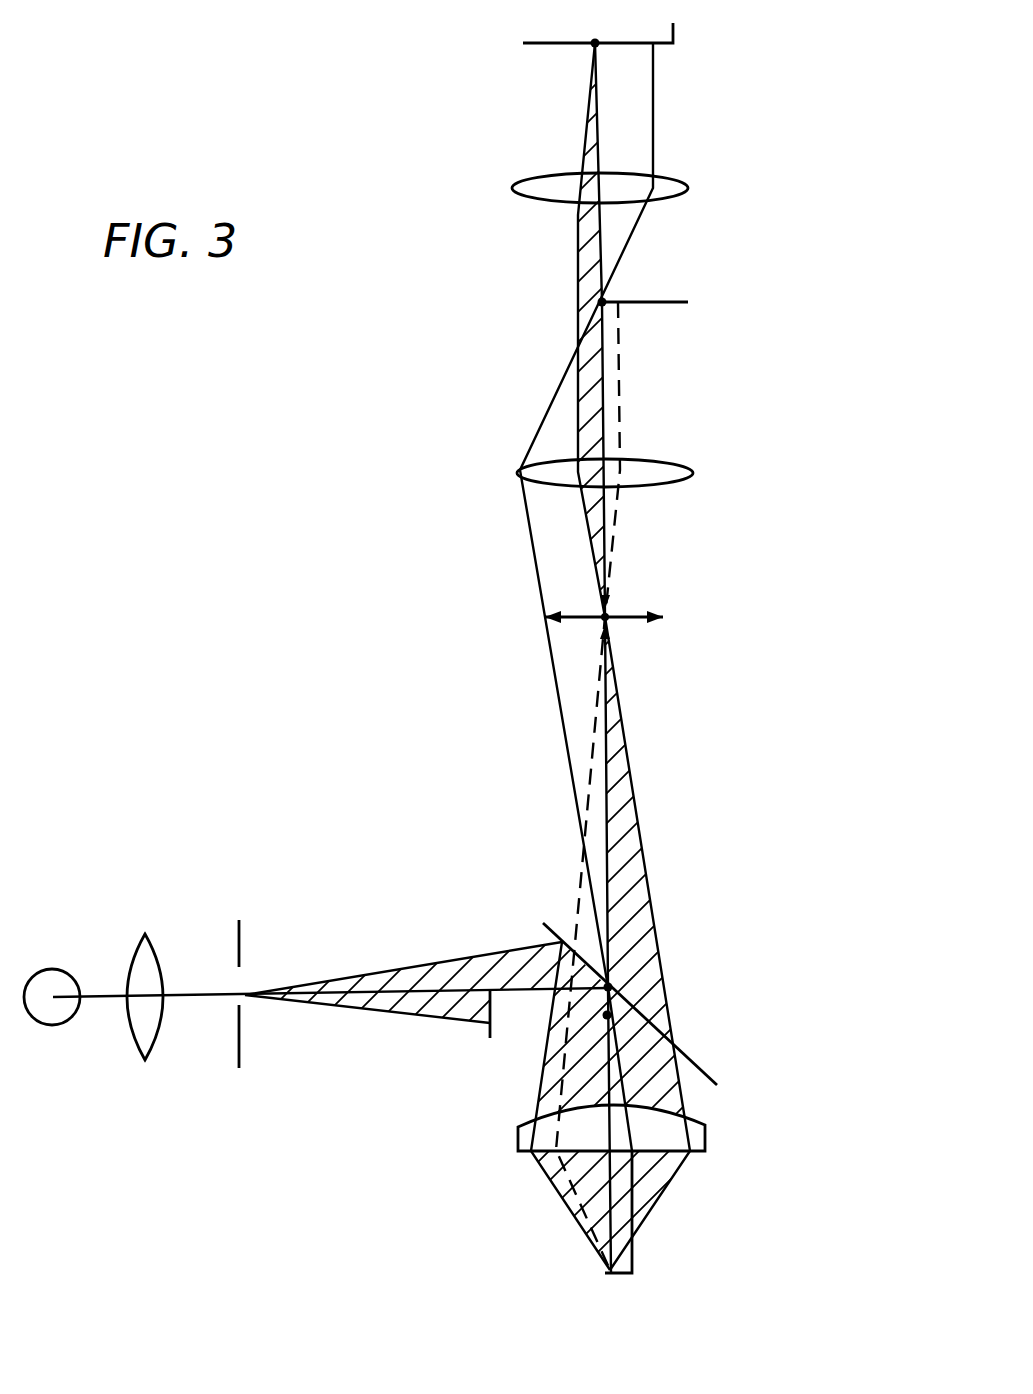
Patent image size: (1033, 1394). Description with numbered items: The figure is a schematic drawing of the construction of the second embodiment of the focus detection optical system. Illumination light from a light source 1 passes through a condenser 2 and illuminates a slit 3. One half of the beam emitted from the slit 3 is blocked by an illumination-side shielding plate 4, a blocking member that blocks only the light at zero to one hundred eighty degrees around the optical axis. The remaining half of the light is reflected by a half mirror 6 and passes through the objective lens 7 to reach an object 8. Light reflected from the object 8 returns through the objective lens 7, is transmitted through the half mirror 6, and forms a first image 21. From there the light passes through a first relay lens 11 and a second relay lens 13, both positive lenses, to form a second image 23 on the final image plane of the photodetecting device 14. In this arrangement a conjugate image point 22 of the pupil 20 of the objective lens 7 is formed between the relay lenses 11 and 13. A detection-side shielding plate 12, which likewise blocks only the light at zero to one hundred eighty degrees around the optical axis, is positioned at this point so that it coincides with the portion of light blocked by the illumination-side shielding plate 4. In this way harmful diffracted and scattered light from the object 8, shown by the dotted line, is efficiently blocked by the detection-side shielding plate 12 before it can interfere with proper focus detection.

The light source 1 is at (50, 970).
The condenser 2 is at (138, 950).
The slit 3 is at (243, 937).
The illumination-side shielding plate 4 is at (491, 1026).
The half mirror 6 is at (702, 1065).
The objective lens 7 is at (700, 1133).
The object 8 is at (608, 1273).
The first relay lens 11 is at (690, 470).
The detection-side shielding plate 12 is at (676, 300).
The second relay lens 13 is at (688, 184).
The photodetecting device 14 is at (523, 34).
The pupil 20 is at (612, 985).
The first image 21 is at (610, 622).
The conjugate image point 22 is at (600, 300).
The second image 23 is at (593, 46).